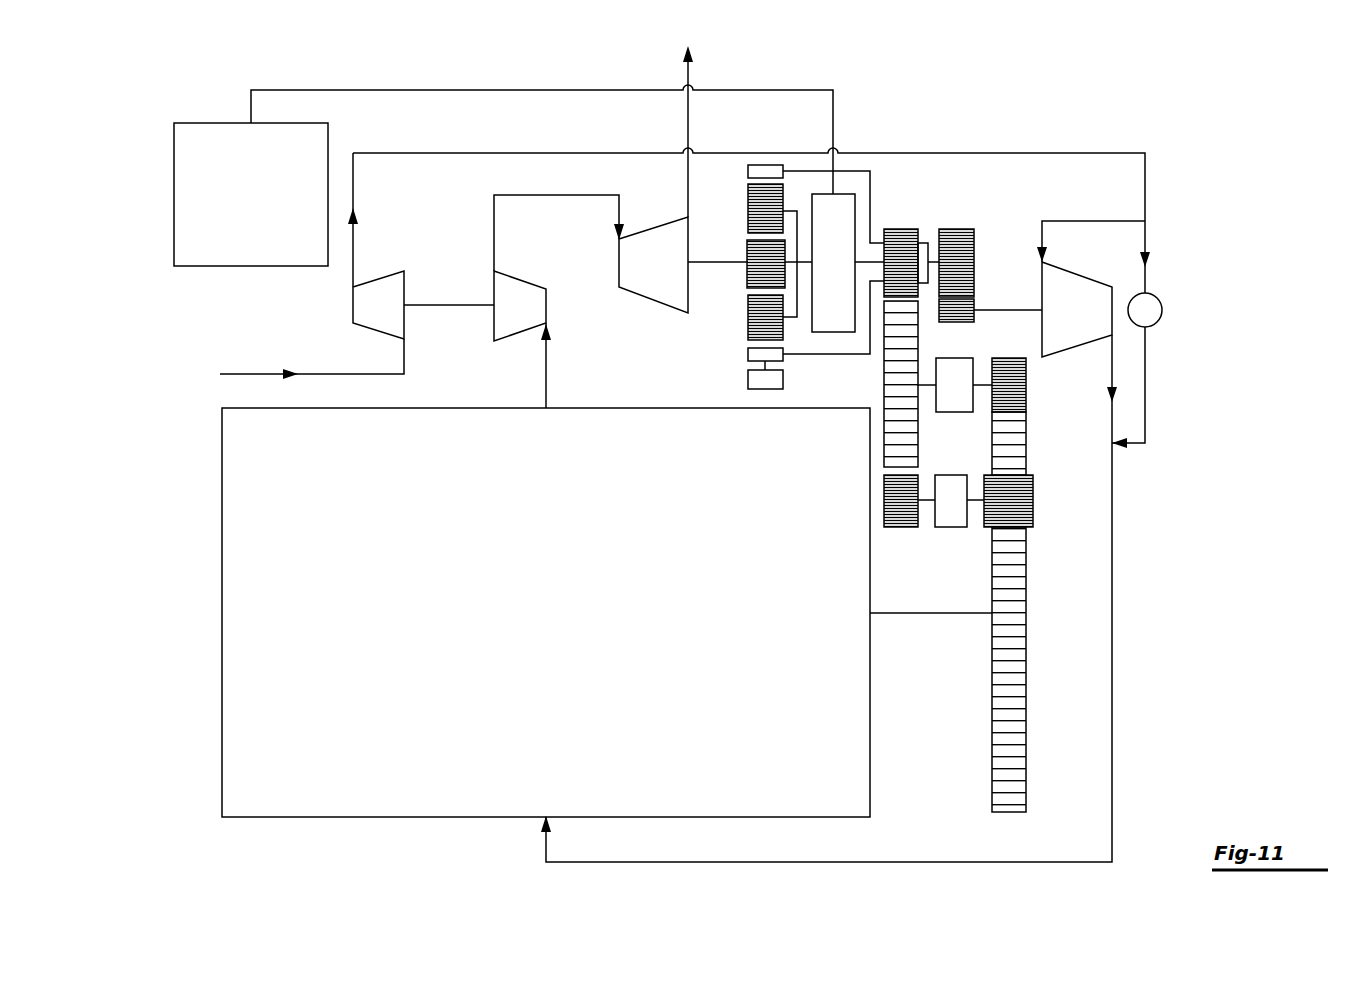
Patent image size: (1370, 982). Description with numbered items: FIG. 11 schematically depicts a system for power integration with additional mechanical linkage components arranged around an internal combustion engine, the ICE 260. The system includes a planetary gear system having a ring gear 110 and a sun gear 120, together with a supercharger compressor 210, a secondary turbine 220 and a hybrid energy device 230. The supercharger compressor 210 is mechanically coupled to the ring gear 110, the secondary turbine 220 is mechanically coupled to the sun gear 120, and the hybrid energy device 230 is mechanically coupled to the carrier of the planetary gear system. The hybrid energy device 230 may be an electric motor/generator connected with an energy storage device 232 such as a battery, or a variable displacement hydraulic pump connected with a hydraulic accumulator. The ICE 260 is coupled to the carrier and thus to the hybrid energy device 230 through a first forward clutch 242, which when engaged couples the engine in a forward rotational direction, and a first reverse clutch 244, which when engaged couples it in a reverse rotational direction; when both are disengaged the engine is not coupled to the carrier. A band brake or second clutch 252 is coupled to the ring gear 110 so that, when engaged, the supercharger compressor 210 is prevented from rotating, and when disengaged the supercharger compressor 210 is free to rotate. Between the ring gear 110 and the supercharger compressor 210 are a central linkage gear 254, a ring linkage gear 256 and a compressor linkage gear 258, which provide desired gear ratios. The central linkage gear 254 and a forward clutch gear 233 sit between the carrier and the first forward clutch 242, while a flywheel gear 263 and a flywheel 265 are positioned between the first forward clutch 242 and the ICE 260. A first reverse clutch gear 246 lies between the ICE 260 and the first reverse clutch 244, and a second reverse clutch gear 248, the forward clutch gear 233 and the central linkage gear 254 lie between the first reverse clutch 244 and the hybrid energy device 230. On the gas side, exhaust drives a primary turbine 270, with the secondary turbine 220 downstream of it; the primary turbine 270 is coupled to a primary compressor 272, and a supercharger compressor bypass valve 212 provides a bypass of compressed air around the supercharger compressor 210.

The ring gear 110 is at (761, 165).
The sun gear 120 is at (748, 247).
The supercharger compressor 210 is at (1060, 270).
The supercharger compressor bypass valve 212 is at (1162, 310).
The secondary turbine 220 is at (638, 275).
The hybrid energy device 230 is at (843, 194).
The energy storage device 232 is at (236, 203).
The forward clutch gear 233 is at (884, 455).
The first forward clutch 242 is at (955, 412).
The first reverse clutch 244 is at (950, 527).
The first reverse clutch gear 246 is at (1033, 500).
The second reverse clutch gear 248 is at (900, 527).
The band brake or second clutch 252 is at (766, 389).
The central linkage gear 254 is at (905, 229).
The ring linkage gear 256 is at (958, 229).
The compressor linkage gear 258 is at (957, 322).
The ICE 260 is at (533, 605).
The flywheel gear 263 is at (1026, 388).
The flywheel 265 is at (1026, 650).
The primary turbine 270 is at (546, 305).
The primary compressor 272 is at (353, 310).